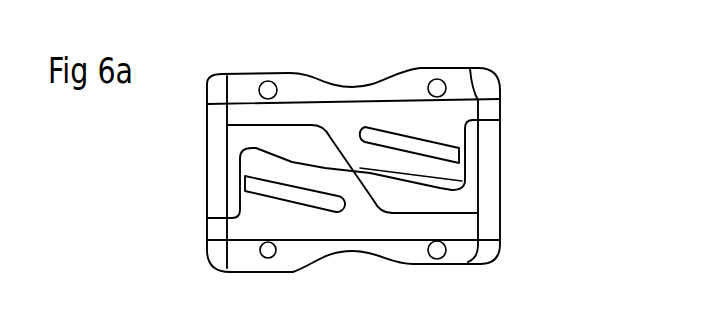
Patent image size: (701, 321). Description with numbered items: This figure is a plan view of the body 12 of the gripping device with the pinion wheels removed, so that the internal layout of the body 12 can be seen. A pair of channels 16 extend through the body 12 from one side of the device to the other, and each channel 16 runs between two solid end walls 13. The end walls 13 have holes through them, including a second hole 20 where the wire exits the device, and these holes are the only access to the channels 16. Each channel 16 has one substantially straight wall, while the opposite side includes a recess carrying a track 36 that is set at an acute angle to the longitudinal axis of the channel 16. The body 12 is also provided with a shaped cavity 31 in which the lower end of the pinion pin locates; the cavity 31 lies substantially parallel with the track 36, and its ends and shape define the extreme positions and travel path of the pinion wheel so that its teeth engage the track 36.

The body 12 is at (378, 245).
The end wall 13 is at (217, 200).
The channel 16 is at (294, 100).
The second hole 20 is at (333, 178).
The shaped cavity 31 is at (390, 130).
The track 36 is at (295, 163).